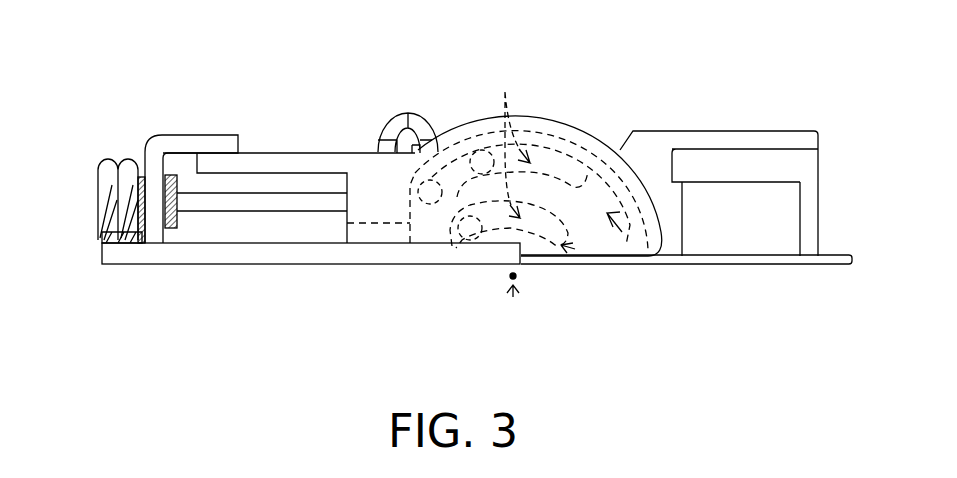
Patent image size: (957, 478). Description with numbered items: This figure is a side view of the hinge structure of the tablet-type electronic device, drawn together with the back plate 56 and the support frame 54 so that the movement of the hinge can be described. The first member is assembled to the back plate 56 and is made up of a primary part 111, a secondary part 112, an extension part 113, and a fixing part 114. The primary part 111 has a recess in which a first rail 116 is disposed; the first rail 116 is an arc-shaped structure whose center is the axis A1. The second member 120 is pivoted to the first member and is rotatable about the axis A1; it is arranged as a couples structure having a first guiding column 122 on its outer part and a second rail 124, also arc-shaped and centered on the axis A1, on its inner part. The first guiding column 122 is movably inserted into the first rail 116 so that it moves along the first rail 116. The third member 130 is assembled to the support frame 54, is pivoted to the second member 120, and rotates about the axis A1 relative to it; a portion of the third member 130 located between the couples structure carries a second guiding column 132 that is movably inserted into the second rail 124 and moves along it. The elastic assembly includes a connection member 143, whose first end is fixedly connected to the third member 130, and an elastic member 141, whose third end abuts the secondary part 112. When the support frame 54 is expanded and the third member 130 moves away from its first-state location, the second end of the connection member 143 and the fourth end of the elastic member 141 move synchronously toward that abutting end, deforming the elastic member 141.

The elastic member 141 is at (108, 158).
The extension part 113 is at (139, 244).
The secondary part 112 is at (176, 136).
The fixing part 114 is at (172, 232).
The back plate 56 is at (306, 253).
The connection member 143 is at (318, 198).
The second member 120 is at (585, 147).
The primary part 111 is at (547, 120).
The second rail 124 is at (624, 240).
The second guiding column 132 is at (468, 216).
The first rail 116 is at (511, 141).
The first guiding column 122 is at (444, 200).
The third member 130 is at (743, 138).
The support frame 54 is at (718, 262).
The axis A1 is at (515, 297).